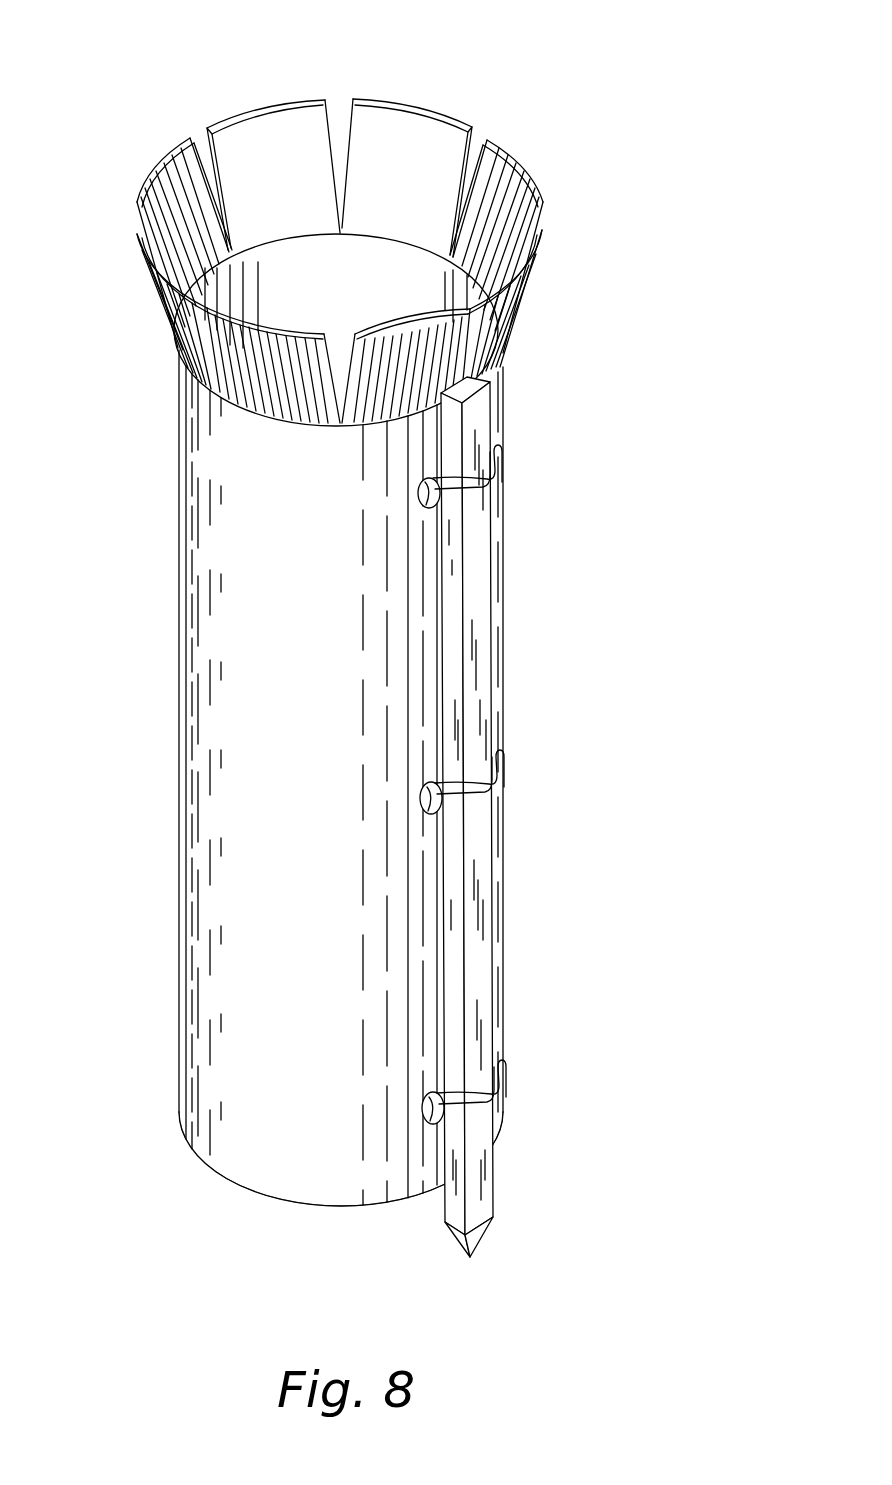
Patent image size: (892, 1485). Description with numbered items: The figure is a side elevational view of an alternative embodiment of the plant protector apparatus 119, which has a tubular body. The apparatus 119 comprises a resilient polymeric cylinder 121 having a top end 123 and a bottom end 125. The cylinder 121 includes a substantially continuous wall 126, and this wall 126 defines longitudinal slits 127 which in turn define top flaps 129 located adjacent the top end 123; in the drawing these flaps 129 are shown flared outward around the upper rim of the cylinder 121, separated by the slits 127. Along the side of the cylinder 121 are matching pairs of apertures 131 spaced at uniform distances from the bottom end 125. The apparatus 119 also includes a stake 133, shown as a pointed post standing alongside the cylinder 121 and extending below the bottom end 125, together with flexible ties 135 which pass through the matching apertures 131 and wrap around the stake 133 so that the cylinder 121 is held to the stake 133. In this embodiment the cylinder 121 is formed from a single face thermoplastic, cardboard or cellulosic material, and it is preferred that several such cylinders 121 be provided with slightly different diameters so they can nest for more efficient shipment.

The plant protector apparatus 119 is at (389, 668).
The resilient polymeric cylinder 121 is at (178, 678).
The top end 123 is at (240, 112).
The bottom end 125 is at (260, 1193).
The wall 126 is at (440, 112).
The longitudinal slits 127 is at (475, 138).
The top flaps 129 is at (507, 168).
The apertures 131 is at (468, 500).
The stake 133 is at (483, 587).
The flexible ties 135 is at (484, 490).